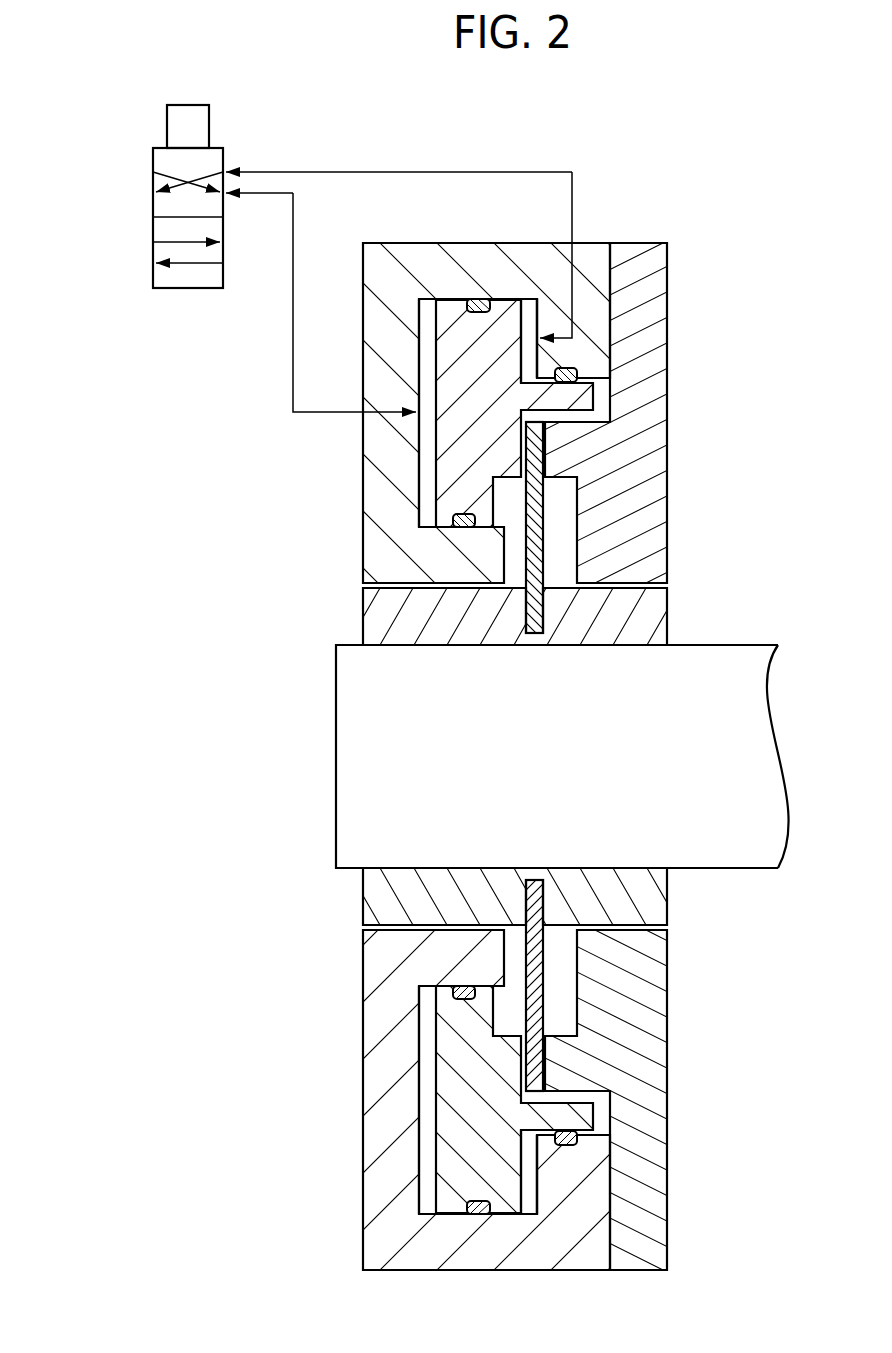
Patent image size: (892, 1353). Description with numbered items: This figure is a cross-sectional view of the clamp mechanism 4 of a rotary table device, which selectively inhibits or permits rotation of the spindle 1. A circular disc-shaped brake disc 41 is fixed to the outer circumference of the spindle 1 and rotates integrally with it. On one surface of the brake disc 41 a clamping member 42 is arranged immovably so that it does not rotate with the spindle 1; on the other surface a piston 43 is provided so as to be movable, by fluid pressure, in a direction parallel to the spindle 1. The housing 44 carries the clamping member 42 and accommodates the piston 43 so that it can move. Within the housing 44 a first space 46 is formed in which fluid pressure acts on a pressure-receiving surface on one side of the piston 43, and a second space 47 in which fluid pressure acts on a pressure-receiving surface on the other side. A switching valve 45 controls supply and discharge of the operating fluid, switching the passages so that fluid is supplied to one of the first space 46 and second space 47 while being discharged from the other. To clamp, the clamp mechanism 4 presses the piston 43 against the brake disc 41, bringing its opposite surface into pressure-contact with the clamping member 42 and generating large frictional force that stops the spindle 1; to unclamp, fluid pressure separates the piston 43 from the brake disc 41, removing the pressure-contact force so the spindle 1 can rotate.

The spindle 1 is at (336, 755).
The clamp mechanism 4 is at (570, 140).
The brake disc 41 is at (545, 527).
The clamping member 42 is at (667, 413).
The piston 43 is at (438, 478).
The housing 44 is at (363, 537).
The switching valve 45 is at (153, 231).
The first space 46 is at (430, 299).
The second space 47 is at (528, 299).